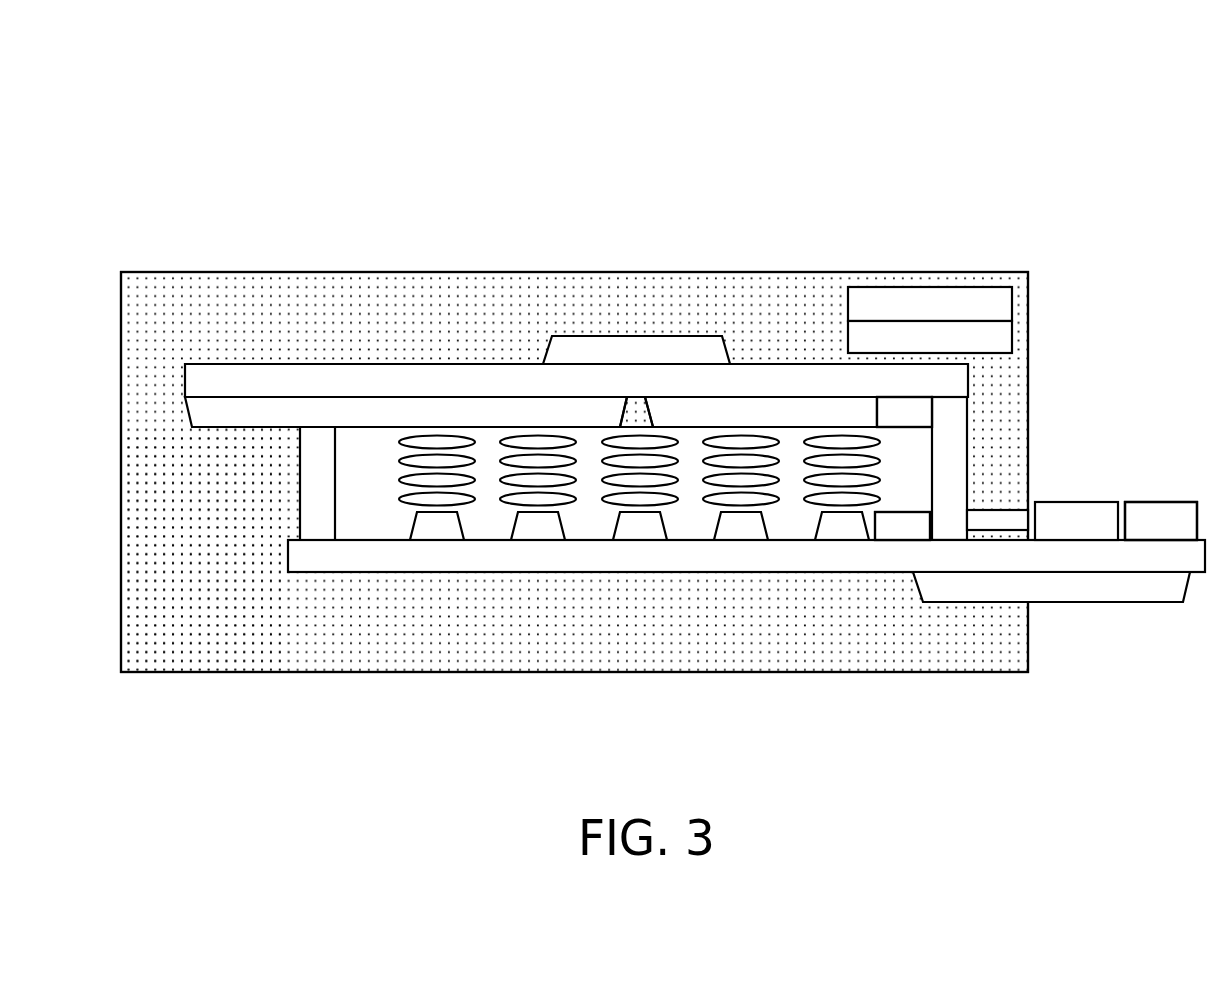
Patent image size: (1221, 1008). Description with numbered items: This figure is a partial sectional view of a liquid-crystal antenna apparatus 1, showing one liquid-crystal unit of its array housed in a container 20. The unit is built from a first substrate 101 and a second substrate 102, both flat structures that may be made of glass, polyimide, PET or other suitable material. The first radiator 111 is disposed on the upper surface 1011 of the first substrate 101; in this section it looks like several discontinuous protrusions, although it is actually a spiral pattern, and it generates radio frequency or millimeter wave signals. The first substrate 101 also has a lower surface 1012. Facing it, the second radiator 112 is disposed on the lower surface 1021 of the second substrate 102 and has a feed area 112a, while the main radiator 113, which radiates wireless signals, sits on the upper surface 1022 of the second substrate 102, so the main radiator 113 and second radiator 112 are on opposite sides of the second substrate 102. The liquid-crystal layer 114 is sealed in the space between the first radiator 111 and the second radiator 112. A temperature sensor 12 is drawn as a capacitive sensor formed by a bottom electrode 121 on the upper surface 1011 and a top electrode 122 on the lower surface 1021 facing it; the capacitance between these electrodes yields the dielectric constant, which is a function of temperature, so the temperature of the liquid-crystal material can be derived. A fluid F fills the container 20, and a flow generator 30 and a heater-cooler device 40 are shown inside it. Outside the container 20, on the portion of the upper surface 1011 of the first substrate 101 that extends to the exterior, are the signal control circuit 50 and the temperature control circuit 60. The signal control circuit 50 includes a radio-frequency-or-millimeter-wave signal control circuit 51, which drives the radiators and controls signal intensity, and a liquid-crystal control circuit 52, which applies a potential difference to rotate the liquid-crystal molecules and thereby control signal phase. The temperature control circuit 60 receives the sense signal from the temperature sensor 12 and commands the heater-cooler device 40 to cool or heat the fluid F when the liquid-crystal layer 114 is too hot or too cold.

The liquid-crystal antenna apparatus 1 is at (1172, 178).
The temperature sensor 12 is at (195, 80).
The container 20 is at (153, 271).
The flow generator 30 is at (988, 337).
The heater-cooler device 40 is at (988, 300).
The signal control circuit 50 is at (1160, 520).
The radio-frequency-or-millimeter-wave signal control circuit 51 is at (1161, 521).
The liquid-crystal control circuit 52 is at (1161, 521).
The temperature control circuit 60 is at (1076, 520).
The first substrate 101 is at (790, 553).
The upper surface of the first substrate 1011 is at (378, 540).
The lower surface of the first substrate 1012 is at (378, 574).
The second substrate 102 is at (781, 380).
The lower surface of the second substrate 1021 is at (238, 400).
The upper surface of the second substrate 1022 is at (233, 362).
The first radiator 111 is at (640, 524).
The second radiator 112 is at (487, 410).
The feed area 112a is at (636, 410).
The main radiator 113 is at (583, 345).
The liquid-crystal layer 114 is at (488, 520).
The bottom electrode 121 is at (892, 525).
The top electrode 122 is at (903, 413).
The fluid F is at (160, 630).